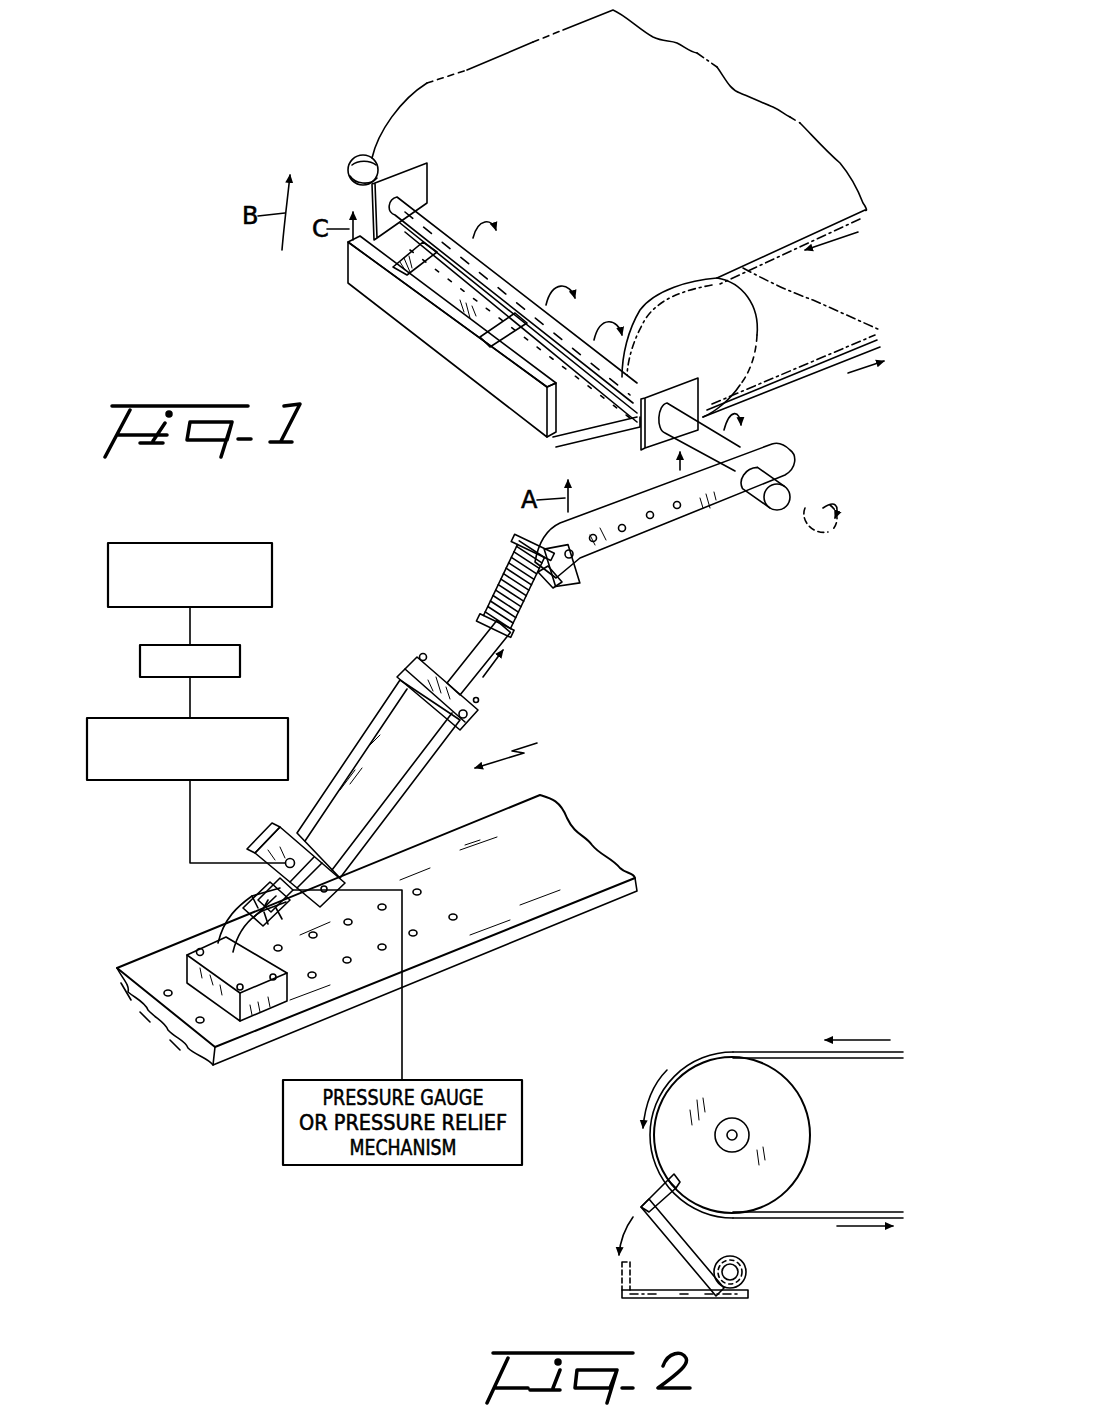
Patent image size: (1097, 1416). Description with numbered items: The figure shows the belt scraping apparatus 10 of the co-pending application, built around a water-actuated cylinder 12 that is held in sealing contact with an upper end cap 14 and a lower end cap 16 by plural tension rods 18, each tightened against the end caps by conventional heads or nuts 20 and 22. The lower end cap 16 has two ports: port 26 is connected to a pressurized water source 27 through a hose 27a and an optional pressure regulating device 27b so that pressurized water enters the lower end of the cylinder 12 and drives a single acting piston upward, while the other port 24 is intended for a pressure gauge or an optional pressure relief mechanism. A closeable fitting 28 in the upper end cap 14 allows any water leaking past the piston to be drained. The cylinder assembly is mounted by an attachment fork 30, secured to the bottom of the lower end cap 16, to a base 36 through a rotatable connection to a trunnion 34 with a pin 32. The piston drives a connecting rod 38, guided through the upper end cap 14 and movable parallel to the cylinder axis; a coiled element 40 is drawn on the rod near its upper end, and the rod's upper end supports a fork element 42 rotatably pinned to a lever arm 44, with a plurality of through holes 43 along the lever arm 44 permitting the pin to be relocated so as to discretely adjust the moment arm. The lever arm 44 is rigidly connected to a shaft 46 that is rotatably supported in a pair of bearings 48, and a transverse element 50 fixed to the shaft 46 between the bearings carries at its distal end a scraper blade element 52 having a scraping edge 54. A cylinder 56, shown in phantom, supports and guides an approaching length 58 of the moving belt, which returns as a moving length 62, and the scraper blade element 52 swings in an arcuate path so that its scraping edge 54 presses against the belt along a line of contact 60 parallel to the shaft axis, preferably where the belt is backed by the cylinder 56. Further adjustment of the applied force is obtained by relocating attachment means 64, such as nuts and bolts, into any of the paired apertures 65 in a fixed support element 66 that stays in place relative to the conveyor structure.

In FIG. 1, the belt scraping apparatus 10 is at (521, 750).
In FIG. 1, the cylinder 12 is at (363, 747).
In FIG. 1, the upper end cap 14 is at (397, 676).
In FIG. 1, the lower end cap 16 is at (267, 837).
In FIG. 1, the tension rods 18 is at (408, 790).
In FIG. 1, the heads or nuts 20 is at (421, 656).
In FIG. 1, the heads or nuts 22 is at (258, 871).
In FIG. 1, the opening or port 24 is at (343, 860).
In FIG. 1, the opening or port 26 is at (287, 838).
In FIG. 1, the pressurized water source 27 is at (275, 563).
In FIG. 1, the hose 27a is at (245, 668).
In FIG. 1, the pressure regulating device 27b is at (136, 786).
In FIG. 1, the closeable fitting 28 is at (479, 716).
In FIG. 1, the attachment fork 30 is at (250, 897).
In FIG. 1, the pin 32 is at (257, 953).
In FIG. 1, the trunnion 34 is at (250, 962).
In FIG. 1, the base 36 is at (247, 1017).
In FIG. 1, the connecting rod 38 is at (497, 640).
In FIG. 1, the spring 40 is at (510, 577).
In FIG. 1, the fork element 42 is at (568, 574).
In FIG. 1, the through holes 43 is at (651, 519).
In FIG. 1, the lever arm 44 is at (697, 497).
In FIG. 1, the shaft 46 is at (778, 480).
In FIG. 2, the shaft 46 is at (747, 1274).
In FIG. 1, the bearings 48 is at (433, 181).
In FIG. 1, the transverse element 50 is at (567, 430).
In FIG. 2, the transverse element 50 is at (680, 1240).
In FIG. 1, the scraper blade element 52 is at (448, 342).
In FIG. 2, the scraper blade element 52 is at (658, 1198).
In FIG. 1, the scraping edge 54 is at (410, 295).
In FIG. 2, the scraping edge 54 is at (680, 1182).
In FIG. 1, the cylinder 56 is at (743, 318).
In FIG. 2, the cylinder 56 is at (795, 1118).
In FIG. 1, the approaching length of belt 58 is at (545, 35).
In FIG. 2, the approaching length of belt 58 is at (798, 1051).
In FIG. 1, the line of contact 60 is at (365, 178).
In FIG. 1, the moving length of belt 62 is at (842, 360).
In FIG. 2, the moving length of belt 62 is at (873, 1209).
In FIG. 1, the attachment means 64 is at (198, 948).
In FIG. 1, the paired apertures 65 is at (421, 892).
In FIG. 1, the fixed support element 66 is at (557, 893).